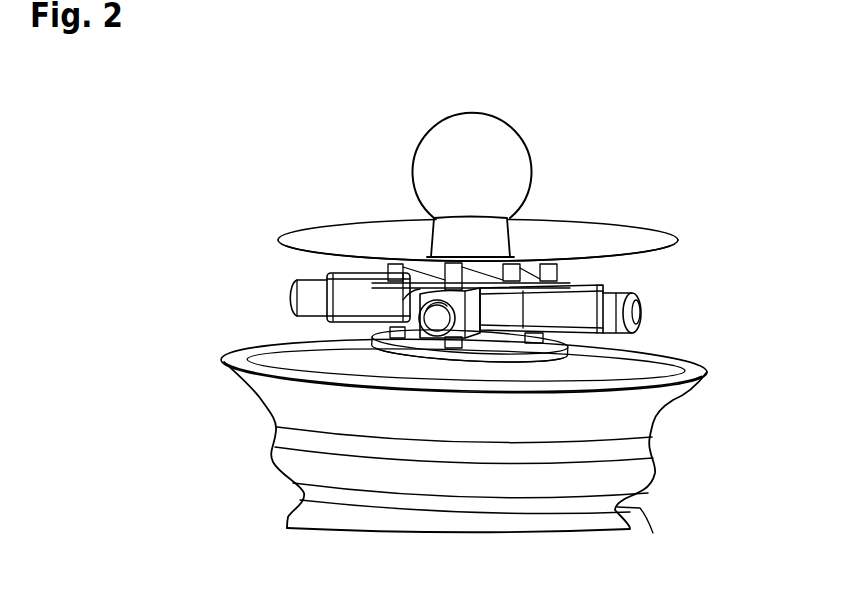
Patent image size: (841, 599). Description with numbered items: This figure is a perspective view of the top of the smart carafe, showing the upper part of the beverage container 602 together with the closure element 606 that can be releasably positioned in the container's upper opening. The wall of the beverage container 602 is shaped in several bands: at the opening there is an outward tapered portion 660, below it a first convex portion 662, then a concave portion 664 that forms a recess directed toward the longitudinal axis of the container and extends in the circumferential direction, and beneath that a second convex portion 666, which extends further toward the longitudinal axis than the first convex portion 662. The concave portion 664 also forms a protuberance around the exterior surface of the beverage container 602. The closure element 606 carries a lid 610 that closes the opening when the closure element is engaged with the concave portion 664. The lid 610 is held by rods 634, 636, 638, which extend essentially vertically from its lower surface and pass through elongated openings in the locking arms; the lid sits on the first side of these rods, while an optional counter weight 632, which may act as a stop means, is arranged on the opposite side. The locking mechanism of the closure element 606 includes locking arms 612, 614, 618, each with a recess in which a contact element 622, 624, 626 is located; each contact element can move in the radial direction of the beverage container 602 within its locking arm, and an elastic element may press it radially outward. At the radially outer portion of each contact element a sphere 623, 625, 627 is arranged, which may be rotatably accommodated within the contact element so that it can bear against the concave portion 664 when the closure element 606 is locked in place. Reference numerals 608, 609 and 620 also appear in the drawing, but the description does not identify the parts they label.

The beverage container 602 is at (512, 466).
The closure element 606 is at (528, 151).
The ball head 608 is at (477, 155).
The shaft 609 is at (447, 237).
The lid 610 is at (310, 233).
The locking arm 612 is at (420, 290).
The locking arm 614 is at (380, 337).
The locking arm 618 is at (578, 297).
The frame 620 is at (510, 227).
The contact element 622 is at (313, 290).
The sphere 623 is at (291, 292).
The contact element 624 is at (420, 291).
The sphere 625 is at (437, 322).
The contact element 626 is at (628, 291).
The sphere 627 is at (637, 312).
The counter weight 632 is at (706, 372).
The rod 634 is at (392, 335).
The rod 636 is at (458, 346).
The rod 638 is at (533, 343).
The outward tapered portion 660 is at (657, 403).
The first convex portion 662 is at (643, 440).
The concave portion 664 is at (645, 470).
The second convex portion 666 is at (623, 510).